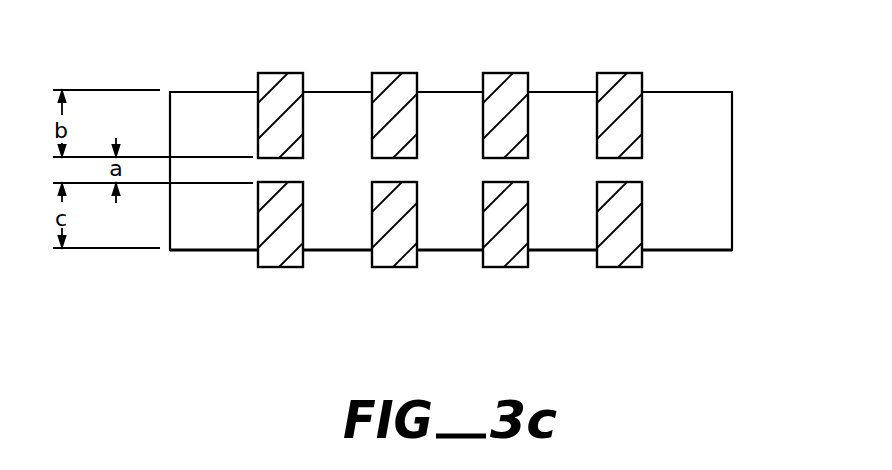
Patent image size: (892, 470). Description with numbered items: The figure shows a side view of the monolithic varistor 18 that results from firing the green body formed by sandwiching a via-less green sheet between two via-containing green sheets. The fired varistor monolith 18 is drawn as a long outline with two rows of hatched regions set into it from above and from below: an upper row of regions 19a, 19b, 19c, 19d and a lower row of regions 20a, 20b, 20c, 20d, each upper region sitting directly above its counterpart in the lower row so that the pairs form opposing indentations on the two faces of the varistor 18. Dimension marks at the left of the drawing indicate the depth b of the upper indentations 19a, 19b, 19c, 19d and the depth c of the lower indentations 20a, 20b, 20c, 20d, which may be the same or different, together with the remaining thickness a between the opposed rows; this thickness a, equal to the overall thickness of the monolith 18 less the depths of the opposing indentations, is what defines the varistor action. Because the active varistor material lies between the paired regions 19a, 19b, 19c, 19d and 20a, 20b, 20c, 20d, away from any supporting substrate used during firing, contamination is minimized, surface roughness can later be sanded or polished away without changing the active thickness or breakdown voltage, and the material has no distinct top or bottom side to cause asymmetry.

The monolithic varistor 18 is at (748, 202).
The first upper conductor element 19a is at (287, 82).
The second upper conductor element 19b is at (401, 82).
The third upper conductor element 19c is at (512, 82).
The fourth upper conductor element 19d is at (626, 82).
The first lower conductor element 20a is at (283, 253).
The second lower conductor element 20b is at (397, 253).
The third lower conductor element 20c is at (508, 253).
The fourth lower conductor element 20d is at (620, 253).